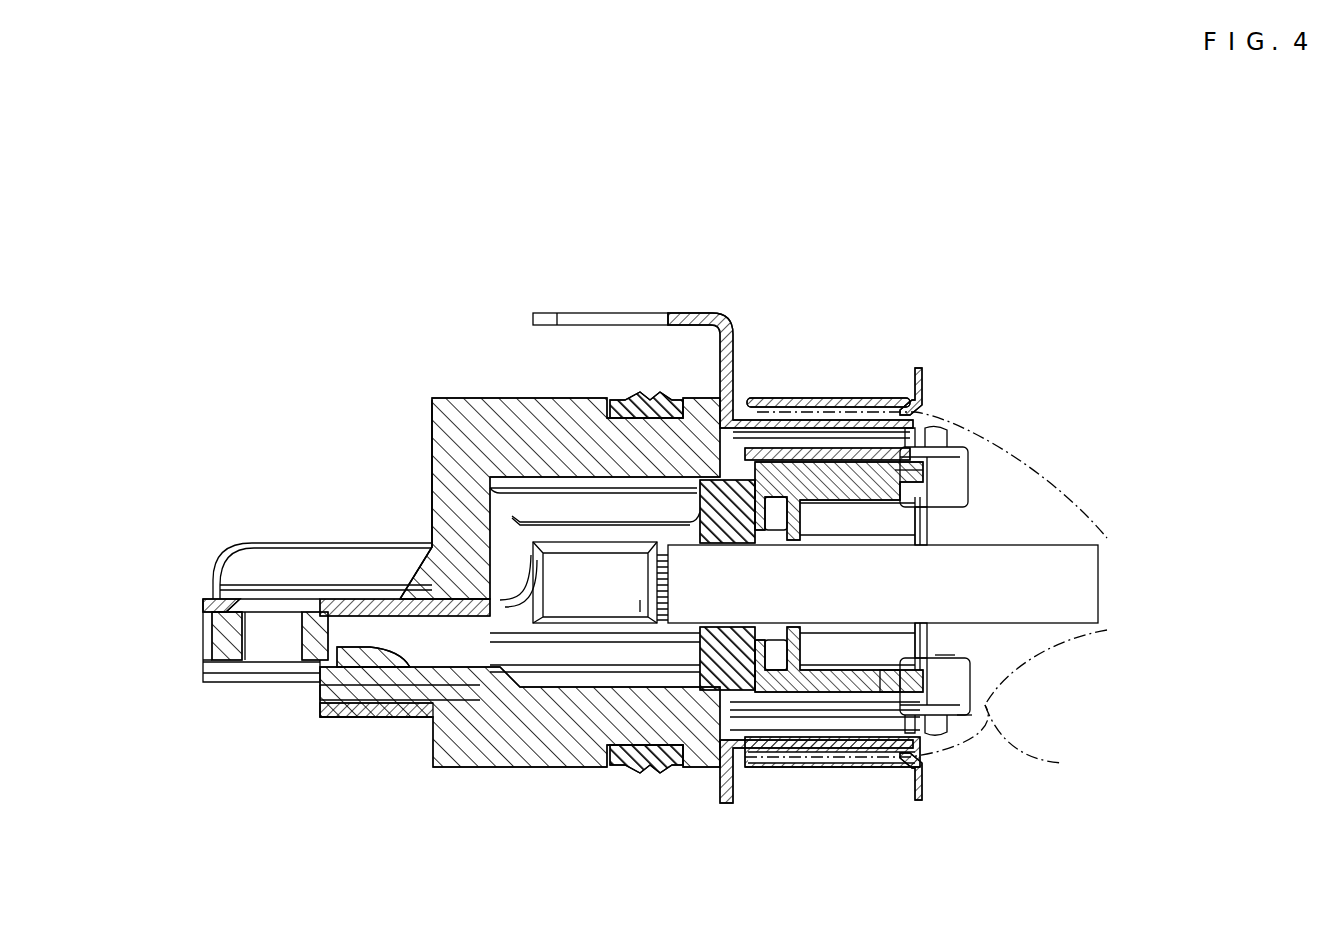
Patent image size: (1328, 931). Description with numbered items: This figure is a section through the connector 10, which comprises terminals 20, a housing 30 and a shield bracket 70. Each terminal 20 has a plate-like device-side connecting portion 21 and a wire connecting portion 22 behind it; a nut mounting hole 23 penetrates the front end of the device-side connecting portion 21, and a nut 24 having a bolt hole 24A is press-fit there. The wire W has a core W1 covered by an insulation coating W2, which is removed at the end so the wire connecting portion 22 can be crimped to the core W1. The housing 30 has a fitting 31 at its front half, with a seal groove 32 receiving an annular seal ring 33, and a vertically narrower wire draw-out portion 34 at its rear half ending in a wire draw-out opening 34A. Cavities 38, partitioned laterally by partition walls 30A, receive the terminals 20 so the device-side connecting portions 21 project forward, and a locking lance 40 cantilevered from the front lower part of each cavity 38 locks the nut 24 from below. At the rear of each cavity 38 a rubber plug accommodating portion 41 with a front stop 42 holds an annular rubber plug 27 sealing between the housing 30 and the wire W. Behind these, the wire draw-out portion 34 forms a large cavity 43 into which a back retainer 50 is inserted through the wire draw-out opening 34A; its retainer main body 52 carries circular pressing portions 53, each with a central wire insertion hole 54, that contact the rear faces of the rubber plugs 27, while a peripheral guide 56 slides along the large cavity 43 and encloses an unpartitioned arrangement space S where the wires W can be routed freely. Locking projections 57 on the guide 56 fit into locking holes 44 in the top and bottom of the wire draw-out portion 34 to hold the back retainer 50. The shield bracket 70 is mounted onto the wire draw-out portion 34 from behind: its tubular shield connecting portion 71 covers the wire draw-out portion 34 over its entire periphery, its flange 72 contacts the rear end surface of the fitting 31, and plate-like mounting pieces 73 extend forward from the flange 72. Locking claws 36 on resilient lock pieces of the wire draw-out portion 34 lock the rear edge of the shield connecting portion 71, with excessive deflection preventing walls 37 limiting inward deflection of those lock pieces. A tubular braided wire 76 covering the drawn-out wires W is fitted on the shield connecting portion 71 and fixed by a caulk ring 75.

The connector 10 is at (762, 242).
The terminal 20 is at (405, 637).
The device-side connecting portion 21 is at (356, 605).
The wire connecting portion 22 is at (583, 600).
The nut mounting hole 23 is at (244, 600).
The nut 24 is at (222, 632).
The bolt hole 24A is at (250, 640).
The rubber plug 27 is at (722, 692).
The housing 30 is at (461, 785).
The partition wall 30A is at (470, 455).
The fitting 31 is at (488, 418).
The seal groove 32 is at (652, 745).
The seal ring 33 is at (655, 395).
The wire draw-out portion 34 is at (860, 742).
The wire draw-out opening 34A is at (960, 716).
The locking claw 36 is at (945, 440).
The excessive deflection preventing wall 37 is at (960, 480).
The cavity 38 is at (570, 478).
The locking lance 40 is at (357, 670).
The rubber plug accommodating portion 41 is at (764, 495).
The front stop 42 is at (685, 660).
The large cavity 43 is at (892, 694).
The locking hole 44 is at (905, 465).
The back retainer 50 is at (794, 697).
The retainer main body 52 is at (818, 510).
The pressing portion 53 is at (780, 497).
The wire insertion hole 54 is at (840, 730).
The guide 56 is at (945, 655).
The locking projection 57 is at (900, 475).
The shield bracket 70 is at (693, 292).
The shield connecting portion 71 is at (868, 768).
The flange 72 is at (731, 352).
The mounting piece 73 is at (580, 312).
The caulk ring 75 is at (877, 398).
The braided wire 76 is at (1045, 762).
The arrangement space S is at (897, 540).
The wire W is at (1122, 593).
The core W1 is at (640, 602).
The insulation coating W2 is at (755, 655).